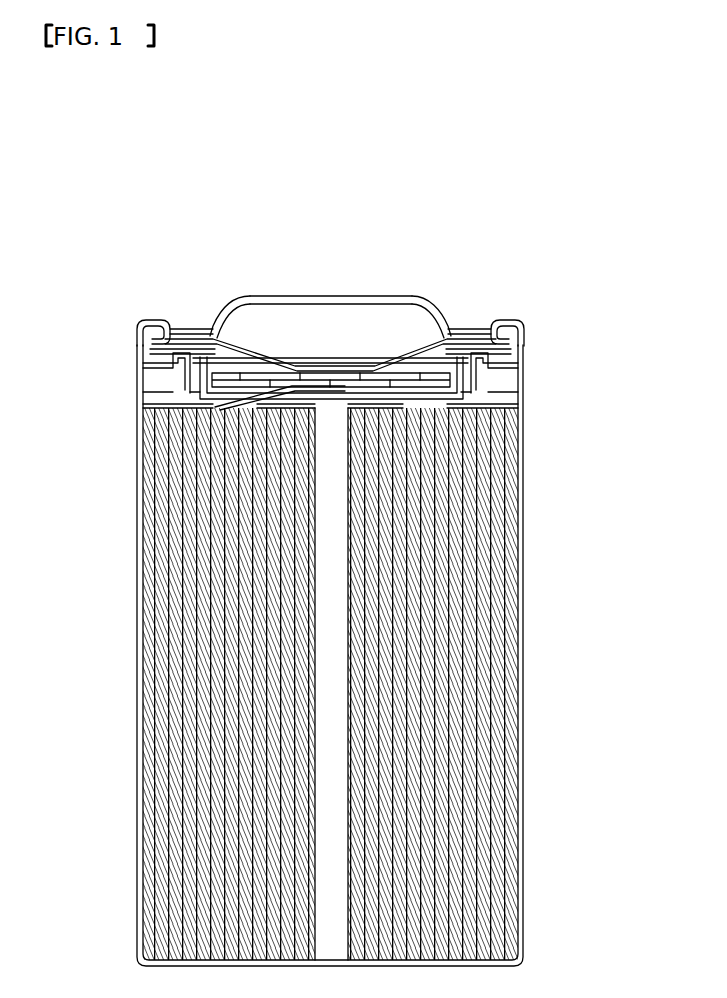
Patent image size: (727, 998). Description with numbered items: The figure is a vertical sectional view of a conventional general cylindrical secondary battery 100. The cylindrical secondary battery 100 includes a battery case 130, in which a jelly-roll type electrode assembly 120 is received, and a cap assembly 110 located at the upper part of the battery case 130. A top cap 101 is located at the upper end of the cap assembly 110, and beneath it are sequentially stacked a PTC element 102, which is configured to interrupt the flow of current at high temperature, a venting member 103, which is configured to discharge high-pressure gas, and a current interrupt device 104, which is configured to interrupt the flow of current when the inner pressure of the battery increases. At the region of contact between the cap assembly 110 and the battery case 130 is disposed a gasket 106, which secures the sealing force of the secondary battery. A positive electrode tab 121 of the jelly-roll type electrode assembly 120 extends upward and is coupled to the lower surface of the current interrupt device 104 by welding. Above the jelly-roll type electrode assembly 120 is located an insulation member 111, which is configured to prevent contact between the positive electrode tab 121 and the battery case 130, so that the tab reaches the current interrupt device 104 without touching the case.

The cylindrical secondary battery 100 is at (158, 236).
The top cap 101 is at (433, 305).
The PTC element 102 is at (527, 343).
The venting member 103 is at (523, 360).
The current interrupt device 104 is at (517, 378).
The gasket 106 is at (137, 342).
The cap assembly 110 is at (625, 287).
The insulation member 111 is at (523, 403).
The jelly-roll type electrode assembly 120 is at (483, 615).
The positive electrode tab 121 is at (327, 358).
The battery case 130 is at (524, 470).